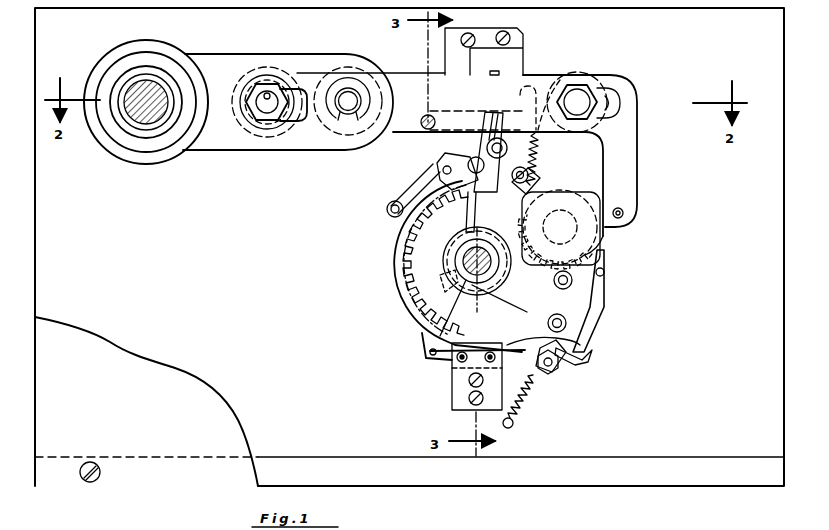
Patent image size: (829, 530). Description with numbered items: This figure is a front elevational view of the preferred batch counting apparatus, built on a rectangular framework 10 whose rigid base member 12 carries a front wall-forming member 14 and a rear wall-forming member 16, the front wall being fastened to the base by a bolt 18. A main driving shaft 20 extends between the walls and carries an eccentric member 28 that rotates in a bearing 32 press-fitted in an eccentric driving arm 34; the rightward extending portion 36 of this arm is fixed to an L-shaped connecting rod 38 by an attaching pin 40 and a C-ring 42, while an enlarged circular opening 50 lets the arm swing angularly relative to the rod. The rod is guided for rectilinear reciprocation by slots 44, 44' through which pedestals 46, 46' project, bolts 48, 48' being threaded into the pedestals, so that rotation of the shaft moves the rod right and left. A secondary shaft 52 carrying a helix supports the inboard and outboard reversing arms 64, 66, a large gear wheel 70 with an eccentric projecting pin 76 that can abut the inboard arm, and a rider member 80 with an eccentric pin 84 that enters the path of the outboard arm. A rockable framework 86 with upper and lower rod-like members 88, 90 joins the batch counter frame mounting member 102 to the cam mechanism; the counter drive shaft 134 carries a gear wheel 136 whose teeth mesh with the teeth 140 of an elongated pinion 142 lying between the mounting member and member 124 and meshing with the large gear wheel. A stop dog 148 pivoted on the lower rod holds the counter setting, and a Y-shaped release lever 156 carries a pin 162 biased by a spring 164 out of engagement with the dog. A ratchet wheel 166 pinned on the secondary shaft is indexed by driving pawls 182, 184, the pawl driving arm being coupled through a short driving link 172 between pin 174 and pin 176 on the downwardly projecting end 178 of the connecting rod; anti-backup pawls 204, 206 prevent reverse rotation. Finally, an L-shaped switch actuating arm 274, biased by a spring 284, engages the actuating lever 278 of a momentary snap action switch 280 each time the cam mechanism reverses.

The rectangular framework 10 is at (336, 218).
The base member 12 is at (292, 460).
The front wall-forming member 14 is at (175, 303).
The rear wall-forming member 16 is at (103, 393).
The bolt 18 is at (96, 464).
The main driving shaft 20 is at (148, 117).
The eccentric member 28 is at (166, 132).
The bearing 32 is at (113, 78).
The eccentric driving arm 34 is at (206, 152).
The rightward extending portion 36 is at (333, 66).
The L-shaped connecting rod 38 is at (394, 138).
The attaching pin 40 is at (352, 100).
The C-ring 42 is at (342, 128).
The slot 44 is at (293, 132).
The pedestal 46 is at (267, 77).
The bolt 48 is at (265, 85).
The enlarged circular opening 50 is at (266, 140).
The secondary shaft 52 is at (432, 324).
The inboard reversing arm 64 is at (420, 250).
The outboard reversing arm 66 is at (420, 282).
The large gear wheel 70 is at (406, 310).
The eccentric projecting pin 76 is at (428, 180).
The rider member 80 is at (489, 118).
The eccentric pin 84 is at (420, 298).
The rockable framework 86 is at (597, 297).
The upper rod-like member 88 is at (497, 118).
The lower rod-like member 90 is at (568, 323).
The batch counter frame mounting member 102 is at (486, 150).
The member 124 is at (594, 356).
The counter drive shaft 134 is at (600, 250).
The gear wheel 136 is at (608, 236).
The teeth 140 is at (387, 208).
The elongated pinion 142 is at (536, 190).
The stop dog 148 is at (592, 362).
The Y-shaped release lever 156 is at (582, 341).
The pin 162 is at (553, 368).
The spring 164 is at (516, 425).
The ratchet wheel 166 is at (420, 262).
The short driving link 172 is at (618, 197).
The pin 174 is at (397, 227).
The pin 176 is at (624, 213).
The downwardly projecting end 178 is at (627, 174).
The left driving pawl 182 is at (437, 166).
The right driving pawl 184 is at (528, 176).
The left anti-backup pawl 204 is at (424, 356).
The right anti-backup pawl 206 is at (524, 384).
The L-shaped switch actuating arm 274 is at (552, 82).
The actuating lever 278 is at (522, 85).
The momentary snap action switch 280 is at (515, 45).
The spring 284 is at (538, 152).
The slot 44' is at (629, 102).
The pedestal 46' is at (606, 89).
The bolt 48' is at (583, 89).